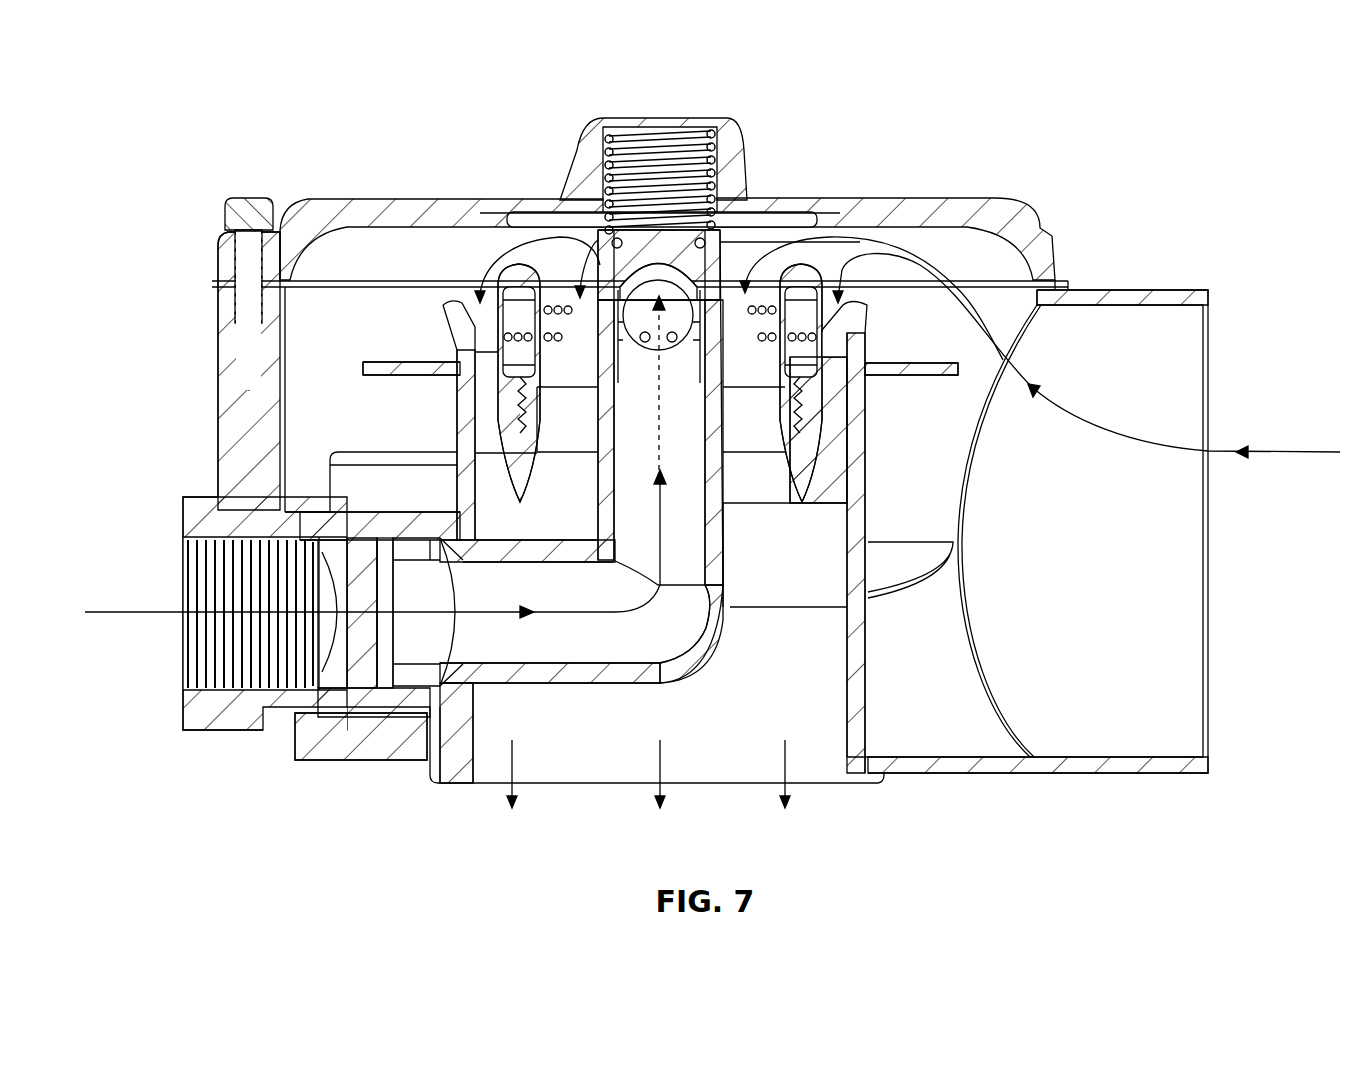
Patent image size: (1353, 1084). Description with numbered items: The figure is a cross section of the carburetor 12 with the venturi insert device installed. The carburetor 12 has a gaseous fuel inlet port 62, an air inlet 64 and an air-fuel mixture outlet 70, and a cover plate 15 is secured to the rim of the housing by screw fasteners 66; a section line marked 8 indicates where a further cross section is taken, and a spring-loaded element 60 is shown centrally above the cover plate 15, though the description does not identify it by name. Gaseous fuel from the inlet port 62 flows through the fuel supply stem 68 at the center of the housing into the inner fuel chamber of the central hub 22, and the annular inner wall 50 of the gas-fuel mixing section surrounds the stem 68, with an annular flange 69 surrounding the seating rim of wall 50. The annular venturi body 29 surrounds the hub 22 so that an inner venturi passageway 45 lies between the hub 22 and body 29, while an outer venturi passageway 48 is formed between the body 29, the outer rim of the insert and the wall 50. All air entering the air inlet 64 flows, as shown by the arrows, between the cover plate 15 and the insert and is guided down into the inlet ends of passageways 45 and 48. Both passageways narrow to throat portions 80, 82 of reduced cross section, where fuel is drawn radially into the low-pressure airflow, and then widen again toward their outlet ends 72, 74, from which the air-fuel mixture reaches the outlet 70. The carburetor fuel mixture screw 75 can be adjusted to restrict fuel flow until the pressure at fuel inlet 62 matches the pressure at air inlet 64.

The section line 8- 8 is at (660, 120).
The carburetor 12 is at (1162, 260).
The cover plate 15 is at (428, 223).
The central hub 22 is at (748, 212).
The annular venturi body 29 is at (812, 385).
The inner venturi passageway 45 is at (738, 466).
The outer venturi passageway 48 is at (494, 376).
The annular inner wall 50 is at (860, 498).
The spring cap 60 is at (700, 145).
The gaseous fuel inlet port 62 is at (184, 664).
The air inlet 64 is at (1190, 598).
The screw fasteners 66 is at (252, 197).
The fuel supply stem 68 is at (714, 564).
The annular flange 69 is at (410, 362).
The air-fuel mixture outlet 70 is at (718, 768).
The outlet end of inner venturi passageway 72 is at (553, 487).
The outlet end of outer venturi passageway 74 is at (826, 546).
The carburetor fuel mixture screw 75 is at (344, 738).
The throat portion of inner venturi passageway 80 is at (585, 335).
The throat portion of outer venturi passageway 82 is at (832, 345).